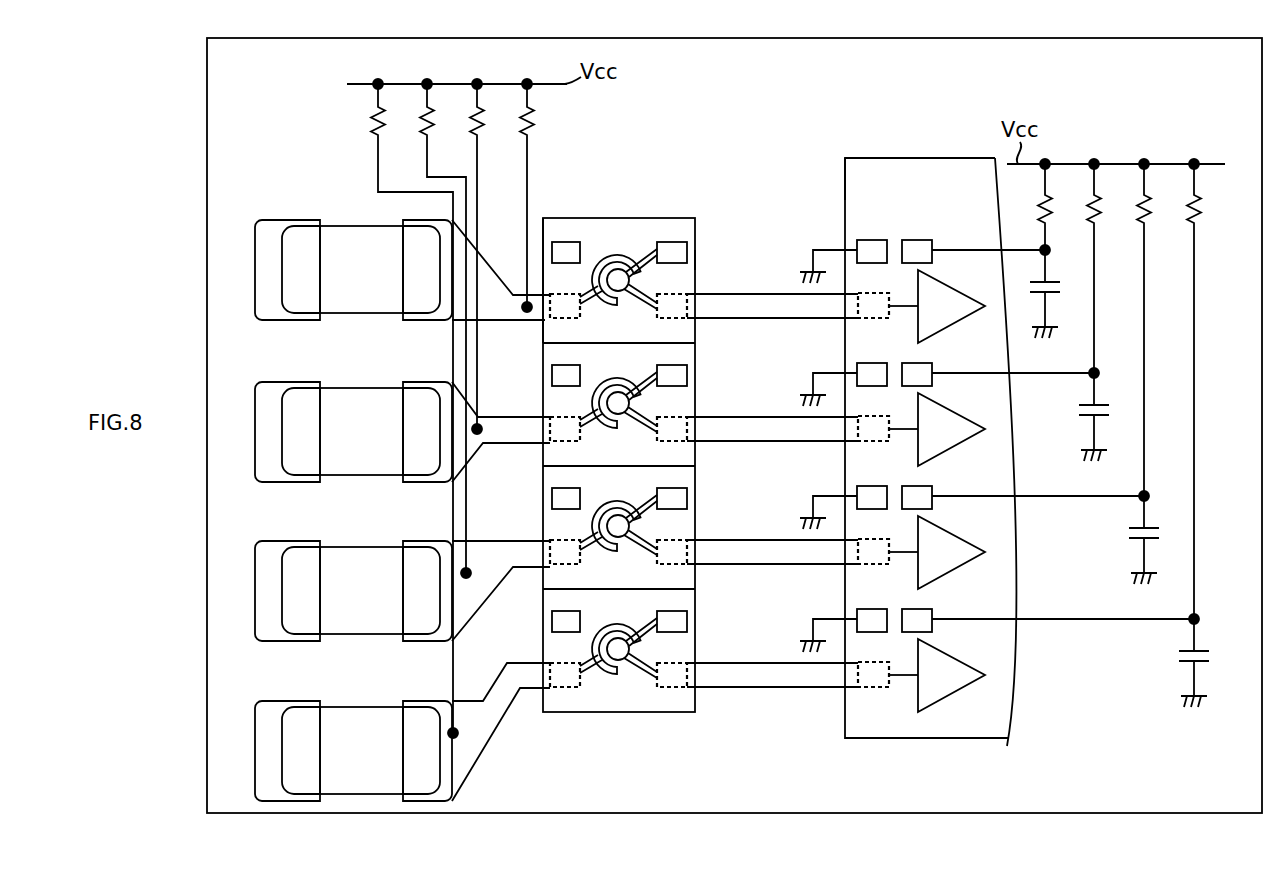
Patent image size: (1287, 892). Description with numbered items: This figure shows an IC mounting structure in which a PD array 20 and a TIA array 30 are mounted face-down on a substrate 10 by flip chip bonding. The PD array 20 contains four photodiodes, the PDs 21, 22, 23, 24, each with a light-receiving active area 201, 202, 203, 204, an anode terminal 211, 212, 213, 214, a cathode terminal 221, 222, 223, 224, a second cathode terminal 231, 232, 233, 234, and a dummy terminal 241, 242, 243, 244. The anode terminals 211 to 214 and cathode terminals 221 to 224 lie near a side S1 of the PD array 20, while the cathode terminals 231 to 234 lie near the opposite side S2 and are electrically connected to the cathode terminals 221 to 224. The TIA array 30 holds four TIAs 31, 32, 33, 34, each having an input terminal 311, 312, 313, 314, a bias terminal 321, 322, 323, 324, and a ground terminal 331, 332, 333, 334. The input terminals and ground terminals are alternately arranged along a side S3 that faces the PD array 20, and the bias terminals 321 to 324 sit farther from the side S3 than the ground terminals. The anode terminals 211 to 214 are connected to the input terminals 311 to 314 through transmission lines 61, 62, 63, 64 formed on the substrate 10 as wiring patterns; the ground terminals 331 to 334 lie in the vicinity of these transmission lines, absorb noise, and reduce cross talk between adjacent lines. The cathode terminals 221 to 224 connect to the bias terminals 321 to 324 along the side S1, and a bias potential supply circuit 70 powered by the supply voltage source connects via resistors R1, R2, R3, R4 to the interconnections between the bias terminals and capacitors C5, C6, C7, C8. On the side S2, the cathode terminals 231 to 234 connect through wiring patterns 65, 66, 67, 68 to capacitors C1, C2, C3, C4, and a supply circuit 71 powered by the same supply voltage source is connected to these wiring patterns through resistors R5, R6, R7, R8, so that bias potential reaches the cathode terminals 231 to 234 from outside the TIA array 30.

The substrate 10 is at (204, 128).
The PD array 20 is at (645, 716).
The PD 21 is at (645, 218).
The PD 22 is at (696, 389).
The PD 23 is at (696, 512).
The PD 24 is at (696, 635).
The TIA array 30 is at (953, 740).
The TIA 31 is at (948, 289).
The TIA 32 is at (948, 412).
The TIA 33 is at (948, 535).
The TIA 34 is at (948, 658).
The transmission line 61 is at (783, 305).
The transmission line 62 is at (783, 428).
The transmission line 63 is at (783, 551).
The transmission line 64 is at (783, 674).
The wiring pattern 65 is at (535, 315).
The wiring pattern 66 is at (519, 443).
The wiring pattern 67 is at (528, 568).
The wiring pattern 68 is at (532, 690).
The bias potential supply circuit 70 is at (1116, 148).
The supply circuit 71 is at (486, 76).
The active area 201 is at (628, 281).
The active area 202 is at (628, 404).
The active area 203 is at (628, 527).
The active area 204 is at (628, 650).
The anode terminal 211 is at (682, 320).
The anode terminal 212 is at (682, 443).
The anode terminal 213 is at (682, 566).
The anode terminal 214 is at (682, 689).
The cathode terminal 221 is at (690, 246).
The cathode terminal 222 is at (690, 369).
The cathode terminal 223 is at (690, 492).
The cathode terminal 224 is at (690, 615).
The cathode terminal 231 is at (565, 320).
The cathode terminal 232 is at (565, 430).
The cathode terminal 233 is at (565, 548).
The cathode terminal 234 is at (565, 688).
The terminal 241 is at (566, 242).
The terminal 242 is at (562, 375).
The terminal 243 is at (562, 499).
The terminal 244 is at (562, 628).
The input terminal 311 is at (866, 318).
The input terminal 312 is at (866, 441).
The input terminal 313 is at (866, 564).
The input terminal 314 is at (866, 687).
The bias terminal 321 is at (918, 240).
The bias terminal 322 is at (920, 364).
The bias terminal 323 is at (920, 487).
The bias terminal 324 is at (920, 610).
The ground terminal 331 is at (873, 240).
The ground terminal 332 is at (868, 364).
The ground terminal 333 is at (868, 487).
The ground terminal 334 is at (868, 610).
The capacitor C1 is at (360, 235).
The capacitor C2 is at (360, 398).
The capacitor C3 is at (360, 556).
The capacitor C4 is at (360, 716).
The capacitor C5 is at (1060, 294).
The capacitor C6 is at (1109, 417).
The capacitor C7 is at (1159, 540).
The capacitor C8 is at (1209, 663).
The resistor R1 is at (1047, 224).
The resistor R2 is at (1097, 224).
The resistor R3 is at (1147, 224).
The resistor R4 is at (1197, 224).
The resistor R5 is at (526, 136).
The resistor R6 is at (476, 136).
The resistor R7 is at (426, 136).
The resistor R8 is at (376, 136).
The side S1 is at (696, 266).
The side S2 is at (544, 230).
The side S3 is at (843, 181).